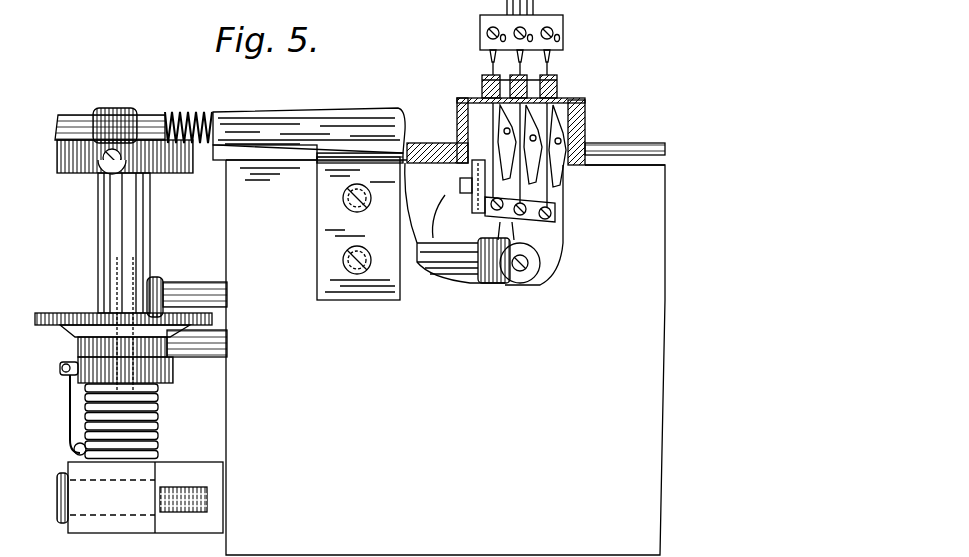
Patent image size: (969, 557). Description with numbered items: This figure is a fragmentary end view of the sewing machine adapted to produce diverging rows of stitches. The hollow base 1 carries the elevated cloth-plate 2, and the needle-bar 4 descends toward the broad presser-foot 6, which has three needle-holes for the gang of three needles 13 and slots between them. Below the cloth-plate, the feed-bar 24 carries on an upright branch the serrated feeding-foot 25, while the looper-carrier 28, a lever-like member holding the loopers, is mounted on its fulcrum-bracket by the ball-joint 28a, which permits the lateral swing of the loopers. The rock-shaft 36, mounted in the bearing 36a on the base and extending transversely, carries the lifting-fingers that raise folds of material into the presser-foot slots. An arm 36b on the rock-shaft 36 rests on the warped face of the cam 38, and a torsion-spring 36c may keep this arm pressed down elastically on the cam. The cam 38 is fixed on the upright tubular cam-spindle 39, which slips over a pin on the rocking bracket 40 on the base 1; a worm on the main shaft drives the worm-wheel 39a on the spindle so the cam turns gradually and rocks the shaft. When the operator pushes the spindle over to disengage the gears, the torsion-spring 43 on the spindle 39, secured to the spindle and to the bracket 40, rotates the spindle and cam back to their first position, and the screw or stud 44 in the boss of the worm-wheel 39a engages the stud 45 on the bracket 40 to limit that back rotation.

The base 1 is at (439, 350).
The cloth-plate 2 is at (582, 102).
The needle-bar 4 is at (535, 5).
The presser-foot 6 is at (557, 82).
The needles 13 is at (540, 68).
The feed-bar 24 is at (473, 216).
The serrated feeding-foot 25 is at (457, 100).
The looper-carrier 28 is at (540, 228).
The ball-joint 28a is at (533, 268).
The rock-shaft 36 is at (58, 123).
The bearing 36a is at (322, 110).
The arm 36b is at (112, 118).
The torsion-spring 36c is at (184, 114).
The cam 38 is at (57, 165).
The cam-spindle 39 is at (152, 239).
The worm-wheel 39a is at (72, 312).
The rocking bracket 40 is at (120, 533).
The torsion-spring 43 is at (160, 438).
The screw or stud 44 is at (61, 367).
The stud 45 is at (70, 425).